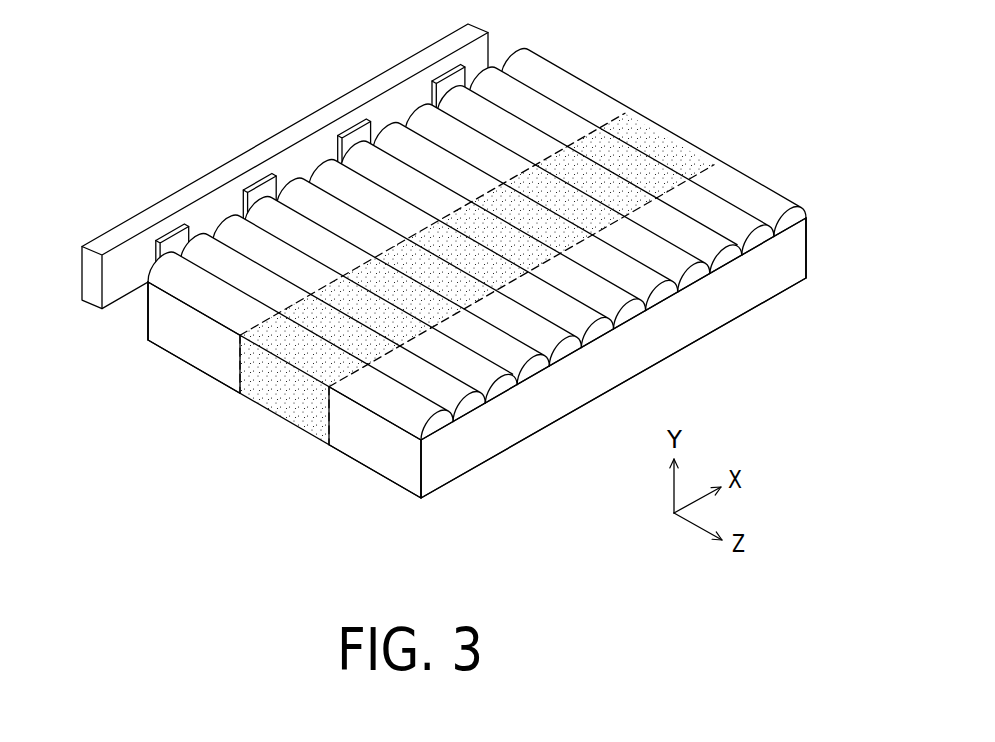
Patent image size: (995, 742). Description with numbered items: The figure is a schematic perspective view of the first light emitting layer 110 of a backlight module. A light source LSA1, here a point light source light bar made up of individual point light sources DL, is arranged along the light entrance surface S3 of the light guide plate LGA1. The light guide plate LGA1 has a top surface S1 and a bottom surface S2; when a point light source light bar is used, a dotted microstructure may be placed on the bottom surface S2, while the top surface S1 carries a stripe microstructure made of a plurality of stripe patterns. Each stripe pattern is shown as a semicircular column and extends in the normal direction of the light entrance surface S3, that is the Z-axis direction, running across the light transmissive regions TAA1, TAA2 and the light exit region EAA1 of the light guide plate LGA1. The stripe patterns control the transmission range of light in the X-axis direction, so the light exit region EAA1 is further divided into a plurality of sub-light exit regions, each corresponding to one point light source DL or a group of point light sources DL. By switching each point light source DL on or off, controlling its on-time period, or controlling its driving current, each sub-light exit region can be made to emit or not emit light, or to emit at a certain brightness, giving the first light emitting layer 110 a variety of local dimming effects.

The first light emitting layer 110 is at (103, 83).
The light source LSA1 is at (197, 188).
The point light source DL is at (172, 230).
The top surface S1 is at (757, 250).
The bottom surface S2 is at (802, 282).
The light entrance surface S3 is at (144, 318).
The light guide plate LGA1 is at (720, 303).
The light transmissive region TAA1 is at (196, 350).
The light exit region EAA1 is at (261, 390).
The light transmissive region TAA2 is at (373, 452).